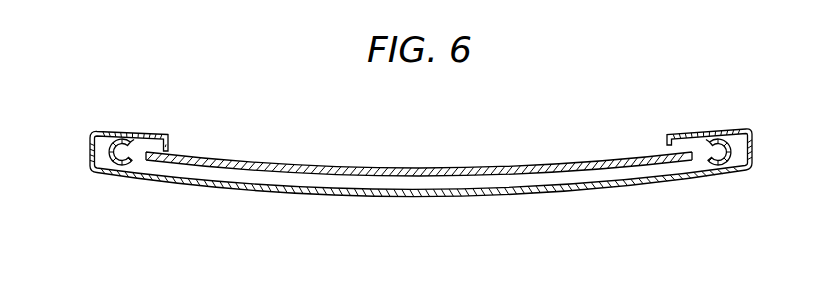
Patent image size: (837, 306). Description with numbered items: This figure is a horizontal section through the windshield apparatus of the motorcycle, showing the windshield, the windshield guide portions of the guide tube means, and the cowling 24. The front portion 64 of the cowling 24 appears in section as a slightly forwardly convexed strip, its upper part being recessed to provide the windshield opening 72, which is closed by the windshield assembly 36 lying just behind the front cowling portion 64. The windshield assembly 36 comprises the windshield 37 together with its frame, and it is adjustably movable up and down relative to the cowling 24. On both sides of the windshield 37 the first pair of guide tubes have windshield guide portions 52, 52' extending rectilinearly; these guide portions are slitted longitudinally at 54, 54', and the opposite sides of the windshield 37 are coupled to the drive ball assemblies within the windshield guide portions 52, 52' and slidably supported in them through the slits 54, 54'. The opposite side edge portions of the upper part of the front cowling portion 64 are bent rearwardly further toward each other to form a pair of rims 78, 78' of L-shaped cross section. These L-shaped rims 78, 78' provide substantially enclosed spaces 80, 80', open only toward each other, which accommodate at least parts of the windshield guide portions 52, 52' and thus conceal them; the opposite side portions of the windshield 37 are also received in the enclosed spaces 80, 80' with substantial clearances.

The cowling 24 is at (128, 178).
The windshield assembly 36 is at (517, 164).
The windshield 37 is at (423, 168).
The windshield guide portion 52 is at (759, 135).
The windshield guide portion 52' is at (80, 144).
The slit 54 is at (678, 125).
The slit 54' is at (167, 125).
The front portion of the cowling 64 is at (363, 197).
The windshield opening 72 is at (178, 180).
The rim 78 is at (721, 107).
The rim 78' is at (139, 103).
The enclosed space 80 is at (774, 150).
The enclosed space 80' is at (94, 158).